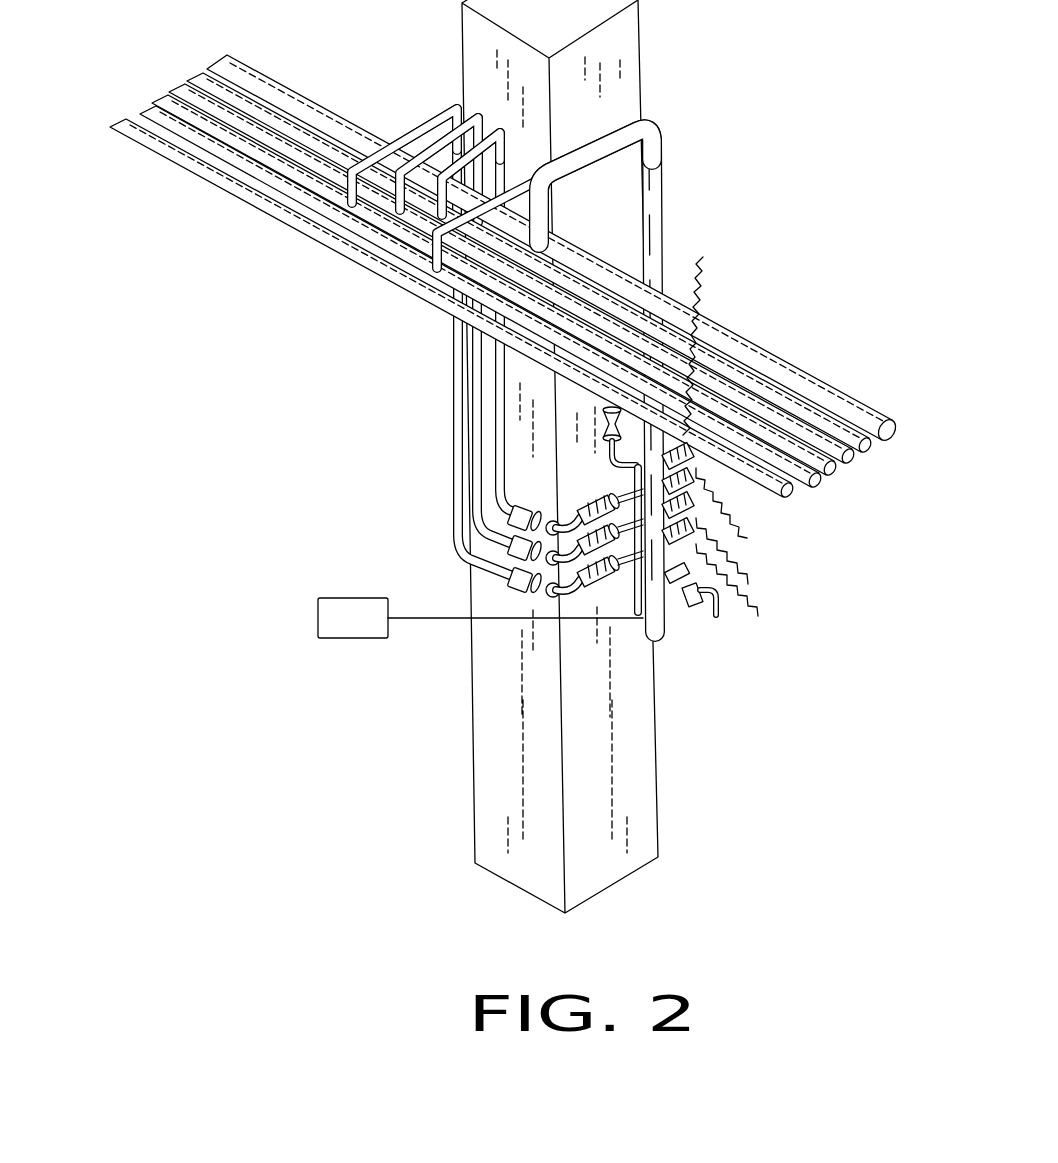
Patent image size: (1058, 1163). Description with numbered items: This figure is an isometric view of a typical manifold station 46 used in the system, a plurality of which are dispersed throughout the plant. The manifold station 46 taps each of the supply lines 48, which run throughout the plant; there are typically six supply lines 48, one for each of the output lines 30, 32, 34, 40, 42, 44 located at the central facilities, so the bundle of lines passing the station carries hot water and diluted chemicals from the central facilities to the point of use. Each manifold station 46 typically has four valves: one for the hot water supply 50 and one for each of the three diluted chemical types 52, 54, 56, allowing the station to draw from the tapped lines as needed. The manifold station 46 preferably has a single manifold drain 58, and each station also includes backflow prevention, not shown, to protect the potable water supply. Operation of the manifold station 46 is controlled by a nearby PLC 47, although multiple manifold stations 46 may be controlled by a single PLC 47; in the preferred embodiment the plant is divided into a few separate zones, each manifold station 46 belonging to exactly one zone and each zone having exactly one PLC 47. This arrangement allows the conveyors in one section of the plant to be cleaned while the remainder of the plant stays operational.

The output line 30 is at (842, 492).
The output line 32 is at (858, 475).
The output line 34 is at (882, 459).
The output line 40 is at (905, 413).
The output line 42 is at (822, 498).
The output line 44 is at (792, 500).
The manifold station 46 is at (796, 257).
The PLC 47 is at (352, 638).
The supply lines 48 is at (516, 308).
The hot water supply valve 50 is at (620, 405).
The diluted chemical valve 52 is at (620, 565).
The diluted chemical valve 54 is at (620, 535).
The diluted chemical valve 56 is at (618, 505).
The manifold drain 58 is at (660, 643).